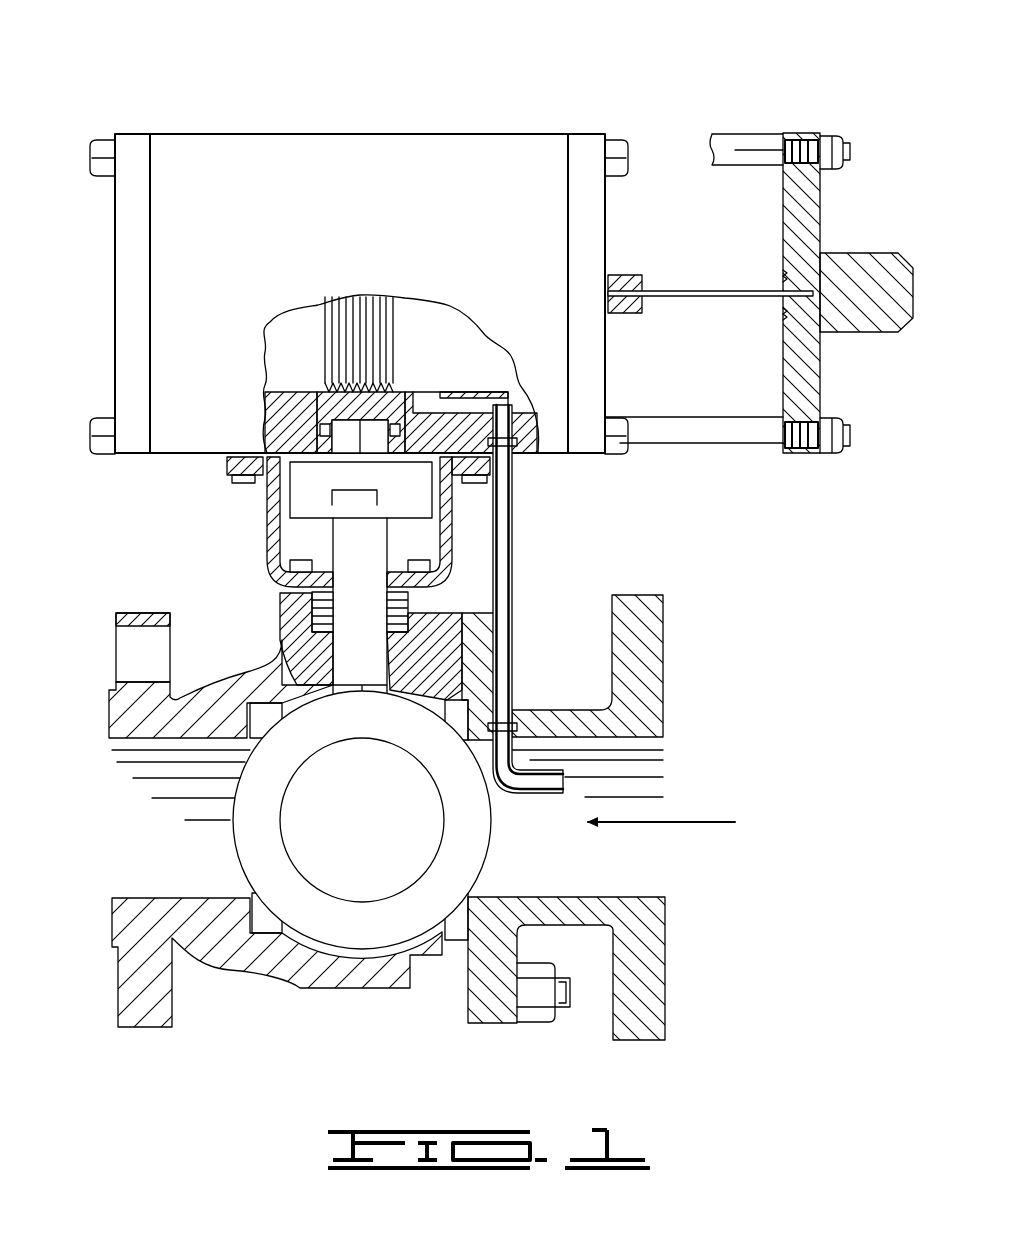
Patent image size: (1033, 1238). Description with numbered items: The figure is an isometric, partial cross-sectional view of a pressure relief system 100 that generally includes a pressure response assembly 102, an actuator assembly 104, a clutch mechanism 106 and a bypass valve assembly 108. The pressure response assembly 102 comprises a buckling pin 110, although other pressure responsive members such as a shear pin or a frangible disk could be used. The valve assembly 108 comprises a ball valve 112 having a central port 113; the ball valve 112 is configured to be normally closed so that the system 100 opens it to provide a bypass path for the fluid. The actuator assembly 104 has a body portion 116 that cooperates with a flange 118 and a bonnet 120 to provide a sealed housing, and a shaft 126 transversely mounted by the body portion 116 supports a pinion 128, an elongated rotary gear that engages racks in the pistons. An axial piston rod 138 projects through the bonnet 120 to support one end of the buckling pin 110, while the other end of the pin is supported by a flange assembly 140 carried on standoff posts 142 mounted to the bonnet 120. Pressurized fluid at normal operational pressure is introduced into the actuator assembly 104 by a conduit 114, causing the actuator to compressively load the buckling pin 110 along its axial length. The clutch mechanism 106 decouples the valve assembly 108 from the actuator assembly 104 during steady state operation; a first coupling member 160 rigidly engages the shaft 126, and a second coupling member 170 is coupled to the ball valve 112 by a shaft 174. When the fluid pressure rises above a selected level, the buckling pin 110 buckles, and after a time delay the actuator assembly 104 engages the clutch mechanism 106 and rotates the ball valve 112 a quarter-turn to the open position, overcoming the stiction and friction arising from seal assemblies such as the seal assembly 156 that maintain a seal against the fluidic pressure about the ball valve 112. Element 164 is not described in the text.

The pressure relief system 100 is at (287, 70).
The pressure response assembly 102 is at (750, 118).
The actuator assembly 104 is at (397, 150).
The clutch mechanism 106 is at (248, 543).
The bypass valve assembly 108 is at (665, 643).
The buckling pin 110 is at (672, 300).
The ball valve 112 is at (245, 835).
The central port 113 is at (310, 845).
The conduit 114 is at (512, 500).
The body portion 116 is at (240, 153).
The flange 118 is at (130, 305).
The bonnet 120 is at (598, 385).
The shaft 126 is at (332, 407).
The pinion 128 is at (375, 340).
The piston rod 138 is at (625, 282).
The flange assembly 140 is at (825, 375).
The standoff posts 142 is at (735, 168).
The seal assembly 156 is at (262, 925).
The first coupling member 160 is at (313, 477).
The stem upper end 164 is at (320, 418).
The second coupling member 170 is at (315, 507).
The shaft 174 is at (355, 602).